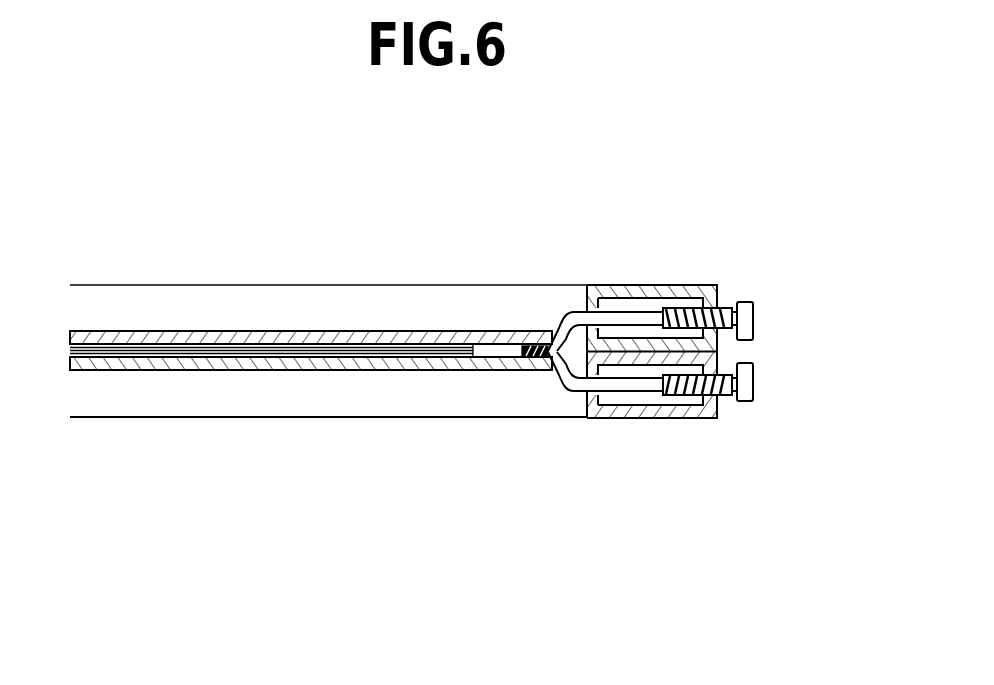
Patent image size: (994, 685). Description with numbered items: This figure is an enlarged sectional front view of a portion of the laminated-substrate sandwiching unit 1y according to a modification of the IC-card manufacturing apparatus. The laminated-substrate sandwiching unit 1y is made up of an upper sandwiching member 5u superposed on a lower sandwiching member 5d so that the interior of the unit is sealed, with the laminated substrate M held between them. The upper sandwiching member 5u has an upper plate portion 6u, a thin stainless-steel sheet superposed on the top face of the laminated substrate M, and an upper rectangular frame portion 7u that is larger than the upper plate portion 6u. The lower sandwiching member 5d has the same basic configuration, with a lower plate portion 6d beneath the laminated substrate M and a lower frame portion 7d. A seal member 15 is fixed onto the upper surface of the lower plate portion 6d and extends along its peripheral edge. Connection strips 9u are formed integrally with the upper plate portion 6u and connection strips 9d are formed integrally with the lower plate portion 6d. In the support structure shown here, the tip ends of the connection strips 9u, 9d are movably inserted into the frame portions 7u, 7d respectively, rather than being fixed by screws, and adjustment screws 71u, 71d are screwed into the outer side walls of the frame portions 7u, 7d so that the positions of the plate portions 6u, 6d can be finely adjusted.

The laminated-substrate sandwiching unit 1y is at (603, 180).
The upper sandwiching member 5u is at (273, 268).
The lower sandwiching member 5d is at (263, 422).
The laminated substrate M is at (132, 346).
The upper plate portion 6u is at (380, 331).
The lower plate portion 6d is at (355, 370).
The seal member 15 is at (522, 352).
The connection strips 9u is at (568, 312).
The connection strips 9d is at (560, 372).
The upper rectangular frame portion 7u is at (663, 285).
The lower frame portion 7d is at (660, 418).
The adjustment screw 71u is at (757, 300).
The adjustment screw 71d is at (758, 407).